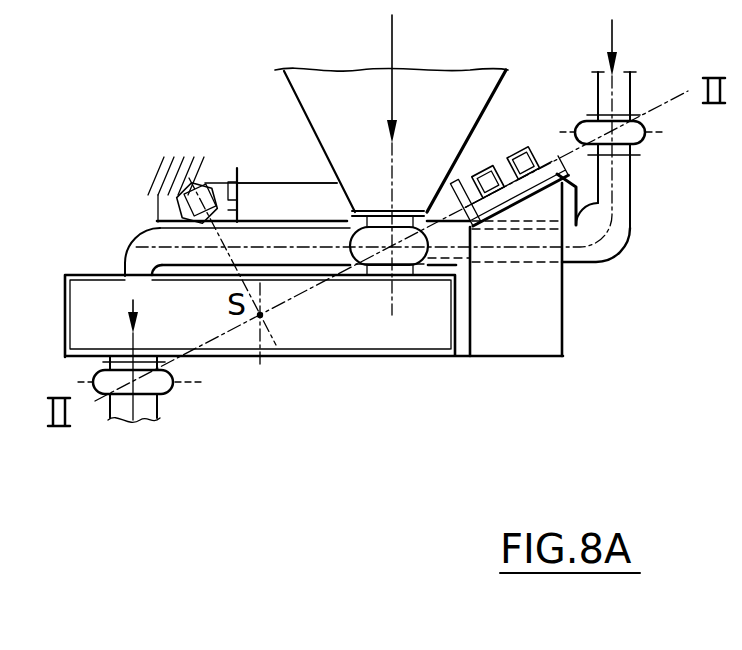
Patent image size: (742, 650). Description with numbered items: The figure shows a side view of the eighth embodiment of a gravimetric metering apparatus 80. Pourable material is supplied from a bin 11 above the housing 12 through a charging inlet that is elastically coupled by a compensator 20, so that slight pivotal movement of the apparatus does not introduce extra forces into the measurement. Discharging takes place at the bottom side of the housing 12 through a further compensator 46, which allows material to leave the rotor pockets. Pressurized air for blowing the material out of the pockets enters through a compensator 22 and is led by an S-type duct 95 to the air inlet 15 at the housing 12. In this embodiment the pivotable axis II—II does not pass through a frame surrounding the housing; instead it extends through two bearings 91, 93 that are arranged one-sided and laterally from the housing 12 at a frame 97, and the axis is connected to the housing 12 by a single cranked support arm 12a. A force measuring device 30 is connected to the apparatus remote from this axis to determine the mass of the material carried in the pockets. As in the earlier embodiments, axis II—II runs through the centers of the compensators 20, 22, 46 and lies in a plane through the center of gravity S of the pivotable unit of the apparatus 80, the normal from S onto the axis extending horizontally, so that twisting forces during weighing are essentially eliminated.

The bin 11 is at (293, 90).
The housing 12 is at (365, 348).
The cranked support arm 12a is at (495, 348).
The air inlet 15 is at (125, 268).
The compensator 20 is at (458, 258).
The compensator 22 is at (642, 146).
The force measuring device 30 is at (242, 158).
The compensator 46 is at (175, 387).
The metering apparatus 80 is at (558, 371).
The bearing 91 is at (476, 178).
The bearing 93 is at (533, 148).
The S-type duct 95 is at (598, 264).
The frame 97 is at (305, 183).